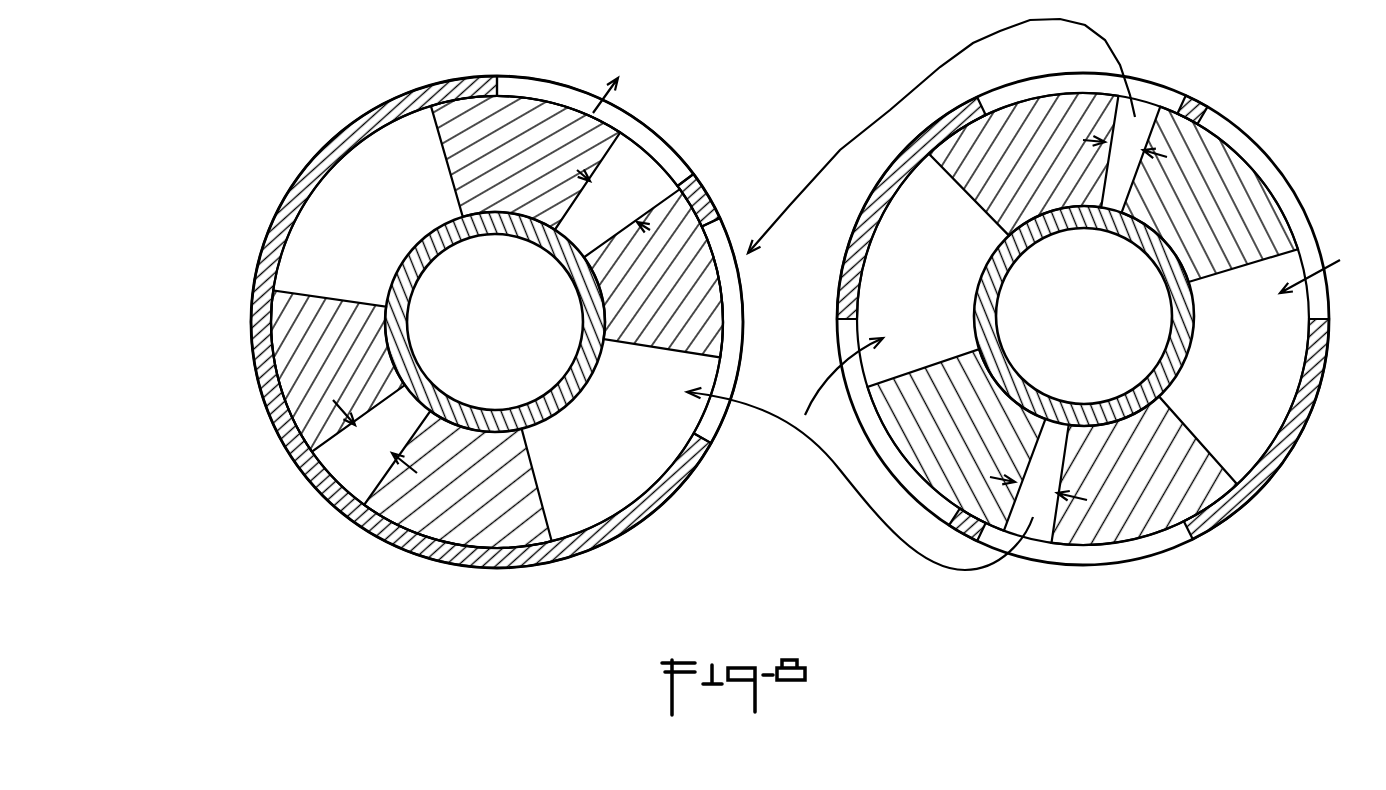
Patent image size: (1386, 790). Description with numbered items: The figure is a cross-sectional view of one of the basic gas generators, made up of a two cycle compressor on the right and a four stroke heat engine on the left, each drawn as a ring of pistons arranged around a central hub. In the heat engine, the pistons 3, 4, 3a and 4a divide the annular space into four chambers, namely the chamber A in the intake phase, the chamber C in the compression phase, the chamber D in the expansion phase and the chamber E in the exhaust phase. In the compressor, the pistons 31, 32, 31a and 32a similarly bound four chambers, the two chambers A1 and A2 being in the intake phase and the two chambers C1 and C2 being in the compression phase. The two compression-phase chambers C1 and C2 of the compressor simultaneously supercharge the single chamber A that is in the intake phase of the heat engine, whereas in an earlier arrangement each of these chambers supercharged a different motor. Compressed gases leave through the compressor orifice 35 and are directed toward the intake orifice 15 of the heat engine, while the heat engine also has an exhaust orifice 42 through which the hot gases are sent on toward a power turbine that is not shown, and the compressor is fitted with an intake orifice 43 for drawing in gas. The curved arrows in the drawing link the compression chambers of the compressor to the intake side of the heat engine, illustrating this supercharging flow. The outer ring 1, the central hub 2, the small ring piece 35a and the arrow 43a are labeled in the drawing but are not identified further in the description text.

The outer ring 1 is at (375, 527).
The hub 2 is at (452, 222).
The piston 3 is at (698, 220).
The piston 3a is at (305, 388).
The piston 4 is at (536, 125).
The piston 4a is at (457, 513).
The intake orifice 15 is at (735, 346).
The exhaust orifice 42 is at (653, 140).
The piston 31 is at (1052, 117).
The piston 31a is at (1142, 513).
The piston 32 is at (1250, 223).
The piston 32a is at (920, 410).
The compressor orifice 35 is at (1168, 100).
The ring piece 35a is at (1040, 547).
The intake orifice 43 is at (1320, 312).
The direction arrow 43a is at (844, 390).
The chamber in the intake phase A is at (816, 479).
The chamber in the compression phase C is at (375, 436).
The chamber in the expansion phase D is at (355, 214).
The chamber in the exhaust phase E is at (613, 201).
The chamber in the intake phase A1 is at (927, 258).
The chamber in the intake phase A2 is at (1284, 317).
The chamber in the compression phase C1 is at (957, 136).
The chamber in the compression phase C2 is at (1038, 494).